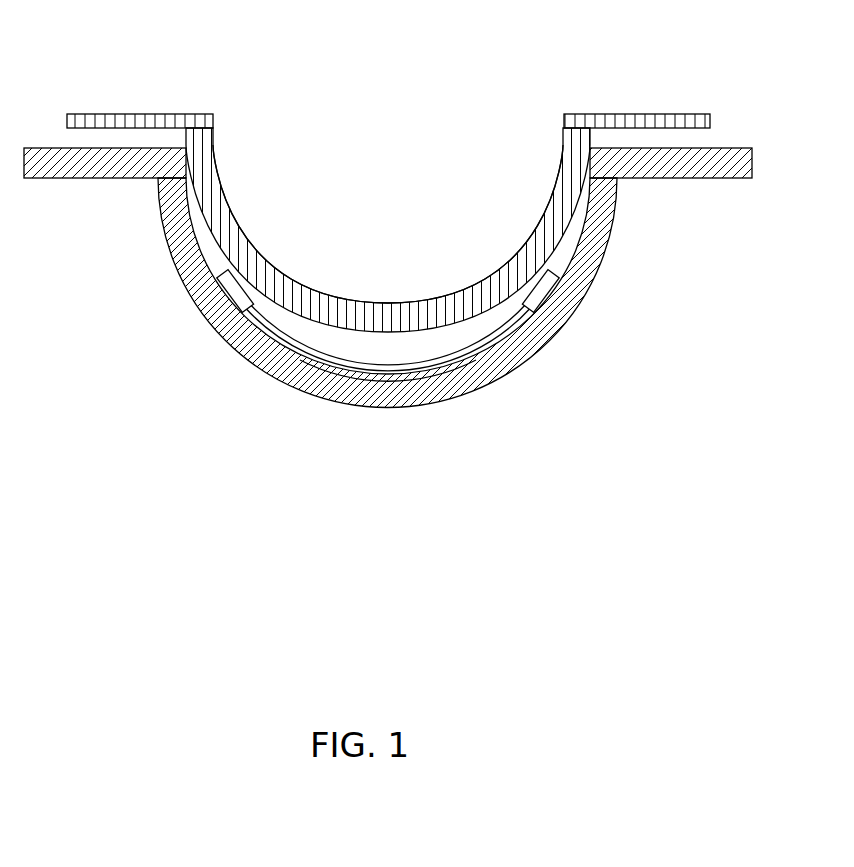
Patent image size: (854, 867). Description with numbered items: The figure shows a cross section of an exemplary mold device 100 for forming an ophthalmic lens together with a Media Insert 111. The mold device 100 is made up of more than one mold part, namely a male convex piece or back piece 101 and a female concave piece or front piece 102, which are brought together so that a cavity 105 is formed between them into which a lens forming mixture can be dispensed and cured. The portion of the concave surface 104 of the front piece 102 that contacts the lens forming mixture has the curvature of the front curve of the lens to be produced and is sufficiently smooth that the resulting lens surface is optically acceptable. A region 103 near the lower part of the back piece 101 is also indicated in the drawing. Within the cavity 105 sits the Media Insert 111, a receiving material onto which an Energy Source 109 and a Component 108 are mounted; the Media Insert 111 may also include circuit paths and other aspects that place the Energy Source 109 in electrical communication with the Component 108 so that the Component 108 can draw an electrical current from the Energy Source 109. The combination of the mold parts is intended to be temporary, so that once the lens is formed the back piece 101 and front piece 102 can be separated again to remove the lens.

The mold device 100 is at (331, 143).
The male convex piece (back piece) 101 is at (545, 205).
The female concave piece (front piece) 102 is at (262, 356).
The inner surface of inner layer 103 is at (427, 321).
The concave surface 104 is at (463, 371).
The cavity 105 is at (321, 342).
The Component 108 is at (545, 288).
The Energy Source 109 is at (232, 288).
The Media Insert 111 is at (416, 372).